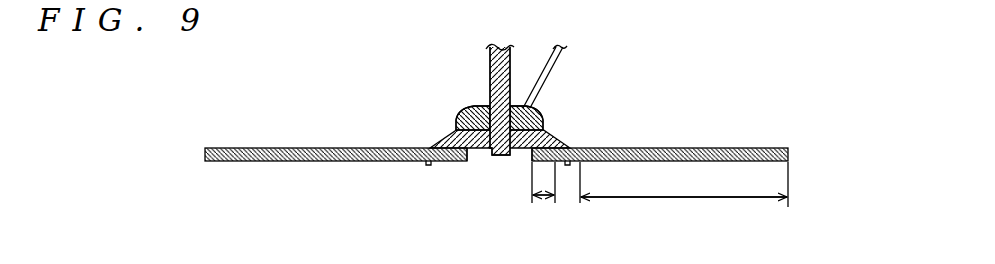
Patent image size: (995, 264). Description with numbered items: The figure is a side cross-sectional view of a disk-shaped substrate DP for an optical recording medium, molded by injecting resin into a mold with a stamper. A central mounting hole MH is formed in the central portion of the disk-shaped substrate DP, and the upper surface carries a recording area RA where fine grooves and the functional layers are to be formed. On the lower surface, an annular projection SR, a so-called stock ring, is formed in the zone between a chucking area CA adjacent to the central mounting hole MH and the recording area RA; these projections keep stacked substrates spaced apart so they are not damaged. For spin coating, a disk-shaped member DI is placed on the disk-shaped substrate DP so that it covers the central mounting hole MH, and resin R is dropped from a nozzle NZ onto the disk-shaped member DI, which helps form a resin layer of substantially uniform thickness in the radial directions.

The disk-shaped substrate DP is at (765, 148).
The central mounting hole MH is at (480, 162).
The disk-shaped member DI is at (443, 142).
The resin R is at (532, 117).
The nozzle NZ is at (558, 63).
The annular projection SR is at (428, 166).
The chucking area CA is at (544, 198).
The recording area RA is at (684, 193).